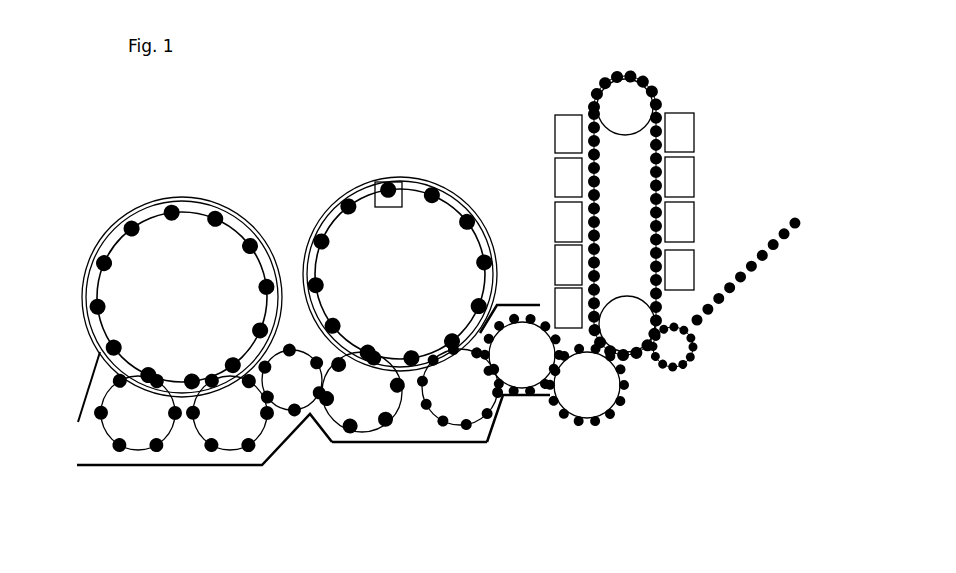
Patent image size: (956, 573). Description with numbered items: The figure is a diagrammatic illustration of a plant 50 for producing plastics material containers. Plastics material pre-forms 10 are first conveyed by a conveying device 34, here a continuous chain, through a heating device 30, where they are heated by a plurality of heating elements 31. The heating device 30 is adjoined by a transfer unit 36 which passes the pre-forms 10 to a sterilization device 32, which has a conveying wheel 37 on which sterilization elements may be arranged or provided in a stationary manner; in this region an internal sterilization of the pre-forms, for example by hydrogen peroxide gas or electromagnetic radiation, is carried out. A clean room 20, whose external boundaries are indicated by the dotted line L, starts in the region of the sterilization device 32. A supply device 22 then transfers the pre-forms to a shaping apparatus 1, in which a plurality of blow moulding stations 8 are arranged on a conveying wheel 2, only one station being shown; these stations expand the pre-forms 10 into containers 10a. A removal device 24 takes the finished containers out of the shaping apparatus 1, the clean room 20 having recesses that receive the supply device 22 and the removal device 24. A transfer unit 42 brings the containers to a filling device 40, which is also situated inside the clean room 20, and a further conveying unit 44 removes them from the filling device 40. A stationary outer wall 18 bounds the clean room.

The shaping apparatus 1 is at (383, 155).
The conveying wheel 2 is at (450, 250).
The blow moulding station 8 is at (398, 178).
The plastics material pre-forms 10 is at (705, 325).
The containers 10a is at (395, 445).
The wall 18 is at (450, 190).
The clean room 20 is at (334, 185).
The supply device 22 is at (478, 405).
The removal device 24 is at (357, 423).
The heating device 30 is at (583, 78).
The heating elements 31 is at (565, 130).
The sterilization device 32 is at (517, 290).
The conveying device 34 is at (625, 100).
The transfer unit 36 is at (585, 398).
The conveying wheel 37 is at (520, 372).
The filling device 40 is at (152, 232).
The transfer unit 42 is at (256, 413).
The conveying unit 44 is at (124, 423).
The plant 50 is at (320, 85).
The dotted line L is at (410, 443).